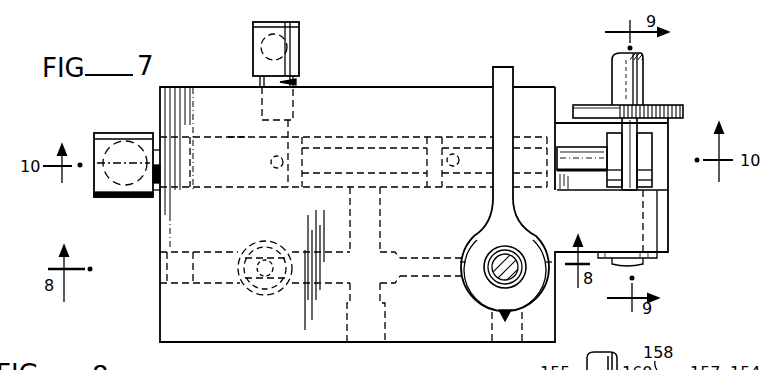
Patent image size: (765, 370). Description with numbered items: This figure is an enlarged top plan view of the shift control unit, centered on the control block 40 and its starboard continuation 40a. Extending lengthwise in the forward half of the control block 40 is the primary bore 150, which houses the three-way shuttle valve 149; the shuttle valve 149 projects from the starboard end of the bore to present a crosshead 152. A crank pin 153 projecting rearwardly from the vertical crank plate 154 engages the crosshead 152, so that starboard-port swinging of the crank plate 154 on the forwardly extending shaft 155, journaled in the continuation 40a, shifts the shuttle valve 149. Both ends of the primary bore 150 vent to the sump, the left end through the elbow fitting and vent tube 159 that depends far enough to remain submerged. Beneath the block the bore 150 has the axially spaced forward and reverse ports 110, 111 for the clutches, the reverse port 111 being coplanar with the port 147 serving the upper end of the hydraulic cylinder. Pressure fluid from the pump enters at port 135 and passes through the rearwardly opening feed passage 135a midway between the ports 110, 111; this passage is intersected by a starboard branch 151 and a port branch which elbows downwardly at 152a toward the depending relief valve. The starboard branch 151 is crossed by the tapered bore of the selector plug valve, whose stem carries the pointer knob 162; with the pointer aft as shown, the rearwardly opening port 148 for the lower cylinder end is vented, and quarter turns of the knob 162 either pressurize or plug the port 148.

The control block 40 is at (172, 316).
The starboard continuation of the block 40a is at (658, 230).
The forward port 110 is at (454, 153).
The reverse port 111 is at (270, 162).
The pump supply port 135 is at (368, 325).
The feed passage 135a is at (377, 218).
The upper cylinder port 147 is at (286, 131).
The lower cylinder port 148 is at (510, 330).
The three-way shuttle valve 149 is at (380, 158).
The primary bore 150 is at (227, 136).
The starboard branch 151 is at (457, 258).
The crosshead 152 is at (235, 254).
The downward elbow of port branch 152a is at (256, 290).
The crank pin 153 is at (627, 192).
The crank plate 154 is at (667, 105).
The shaft 155 is at (612, 80).
The vent tube 159 is at (111, 196).
The pointer knob 162 is at (527, 238).